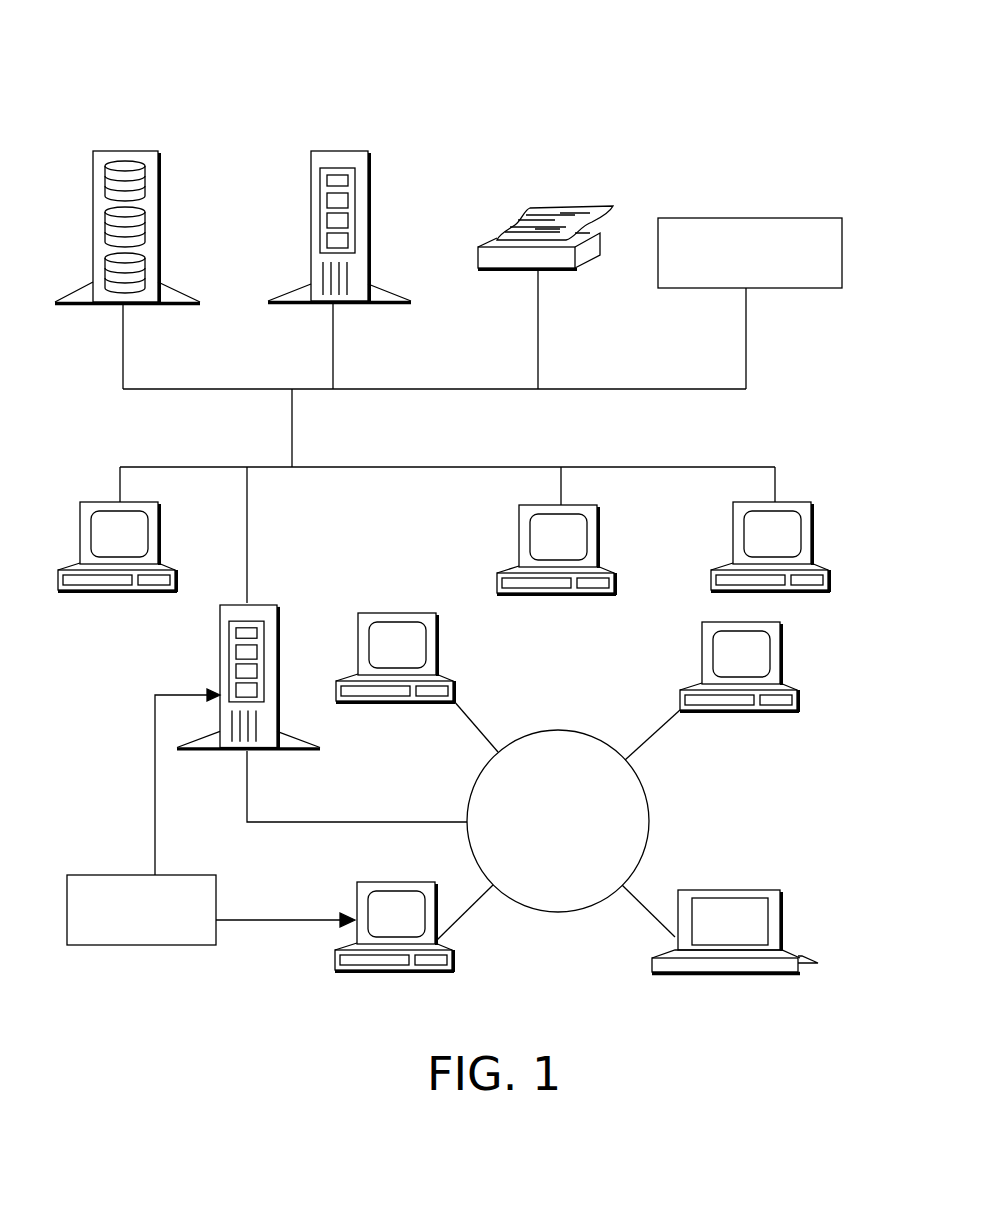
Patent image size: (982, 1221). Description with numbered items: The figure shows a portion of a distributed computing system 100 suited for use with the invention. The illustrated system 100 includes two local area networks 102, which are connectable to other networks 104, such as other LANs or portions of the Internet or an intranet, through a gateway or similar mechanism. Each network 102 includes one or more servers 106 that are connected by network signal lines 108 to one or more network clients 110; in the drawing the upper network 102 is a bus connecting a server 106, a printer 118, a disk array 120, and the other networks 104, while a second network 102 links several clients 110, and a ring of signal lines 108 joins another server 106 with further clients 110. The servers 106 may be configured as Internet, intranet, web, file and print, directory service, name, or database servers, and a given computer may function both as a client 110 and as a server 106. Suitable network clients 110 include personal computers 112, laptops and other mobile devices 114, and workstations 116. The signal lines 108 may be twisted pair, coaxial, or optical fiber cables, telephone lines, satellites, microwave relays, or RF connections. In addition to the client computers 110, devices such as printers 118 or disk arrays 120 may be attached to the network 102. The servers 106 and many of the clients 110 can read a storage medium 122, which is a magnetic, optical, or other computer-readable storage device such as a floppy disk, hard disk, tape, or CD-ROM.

The distributed computing system 100 is at (286, 49).
The local area network 102 is at (479, 391).
The other networks 104 is at (732, 218).
The server 106 is at (333, 150).
The network signal line 108 is at (247, 530).
The network client 110 is at (800, 732).
The personal computer 112 is at (459, 663).
The mobile device 114 is at (703, 890).
The workstation 116 is at (790, 498).
The printer 118 is at (557, 207).
The disk array 120 is at (123, 150).
The storage medium 122 is at (218, 897).